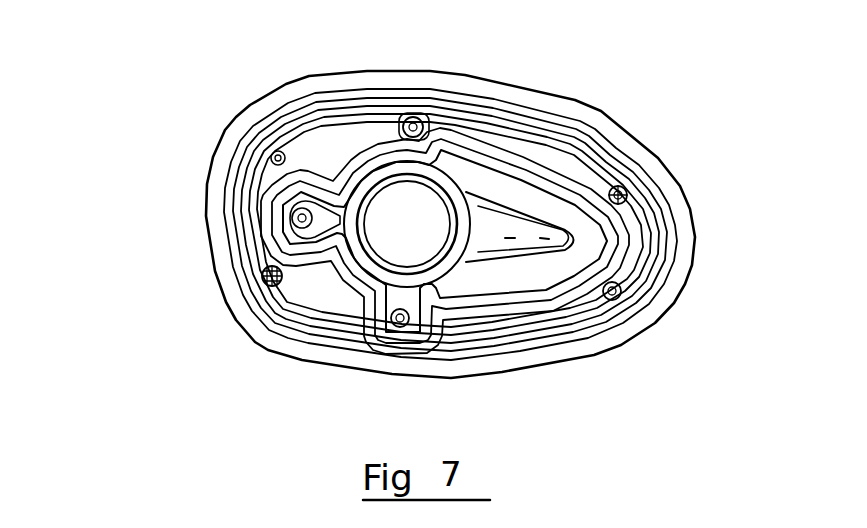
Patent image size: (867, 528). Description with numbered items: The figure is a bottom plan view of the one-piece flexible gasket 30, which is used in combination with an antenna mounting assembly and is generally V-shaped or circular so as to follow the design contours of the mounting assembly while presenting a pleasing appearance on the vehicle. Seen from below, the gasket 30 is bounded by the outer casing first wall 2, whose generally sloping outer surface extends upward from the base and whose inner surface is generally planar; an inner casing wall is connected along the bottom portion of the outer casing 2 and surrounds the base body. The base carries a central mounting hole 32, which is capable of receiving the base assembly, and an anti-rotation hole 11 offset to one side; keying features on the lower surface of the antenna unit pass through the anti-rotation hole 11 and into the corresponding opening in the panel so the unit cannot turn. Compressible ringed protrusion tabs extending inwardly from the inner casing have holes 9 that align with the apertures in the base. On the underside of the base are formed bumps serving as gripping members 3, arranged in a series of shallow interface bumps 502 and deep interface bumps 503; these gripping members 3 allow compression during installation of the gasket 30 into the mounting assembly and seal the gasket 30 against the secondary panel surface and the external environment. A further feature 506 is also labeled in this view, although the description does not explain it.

The gasket 30 is at (404, 236).
The outer casing first wall 2 is at (496, 224).
The gripping members 3 is at (400, 364).
The holes 9 is at (418, 124).
The anti-rotation hole 11 is at (300, 220).
The mounting hole 32 is at (398, 228).
The shallow interface bumps 502 is at (522, 352).
The deep interface bumps 503 is at (447, 265).
The outer wall 506 is at (467, 244).